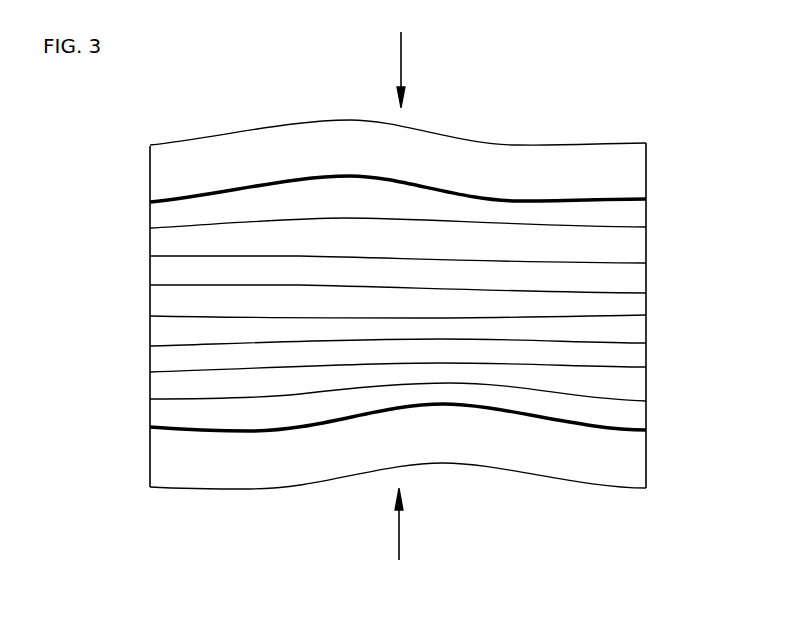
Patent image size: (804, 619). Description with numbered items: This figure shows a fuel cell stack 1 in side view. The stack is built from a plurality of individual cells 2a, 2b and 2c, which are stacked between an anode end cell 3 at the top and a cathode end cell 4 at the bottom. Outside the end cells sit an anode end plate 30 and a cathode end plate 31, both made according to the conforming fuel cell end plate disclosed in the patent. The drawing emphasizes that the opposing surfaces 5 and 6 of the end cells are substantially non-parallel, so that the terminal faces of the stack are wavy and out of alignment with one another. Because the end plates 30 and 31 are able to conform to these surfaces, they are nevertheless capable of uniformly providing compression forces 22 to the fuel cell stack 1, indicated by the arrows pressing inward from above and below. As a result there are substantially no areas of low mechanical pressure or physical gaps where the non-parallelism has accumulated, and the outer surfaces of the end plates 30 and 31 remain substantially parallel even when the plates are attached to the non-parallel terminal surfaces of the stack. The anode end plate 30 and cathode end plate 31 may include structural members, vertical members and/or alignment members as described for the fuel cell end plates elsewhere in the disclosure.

The fuel cell stack 1 is at (646, 155).
The individual cell 2a is at (646, 280).
The individual cell 2b is at (646, 302).
The individual cell 2c is at (646, 328).
The anode end cell 3 is at (150, 211).
The cathode end cell 4 is at (150, 412).
The opposing surface 5 is at (188, 197).
The opposing surface 6 is at (405, 410).
The compression forces 22 is at (401, 72).
The anode end plate 30 is at (217, 137).
The cathode end plate 31 is at (212, 488).